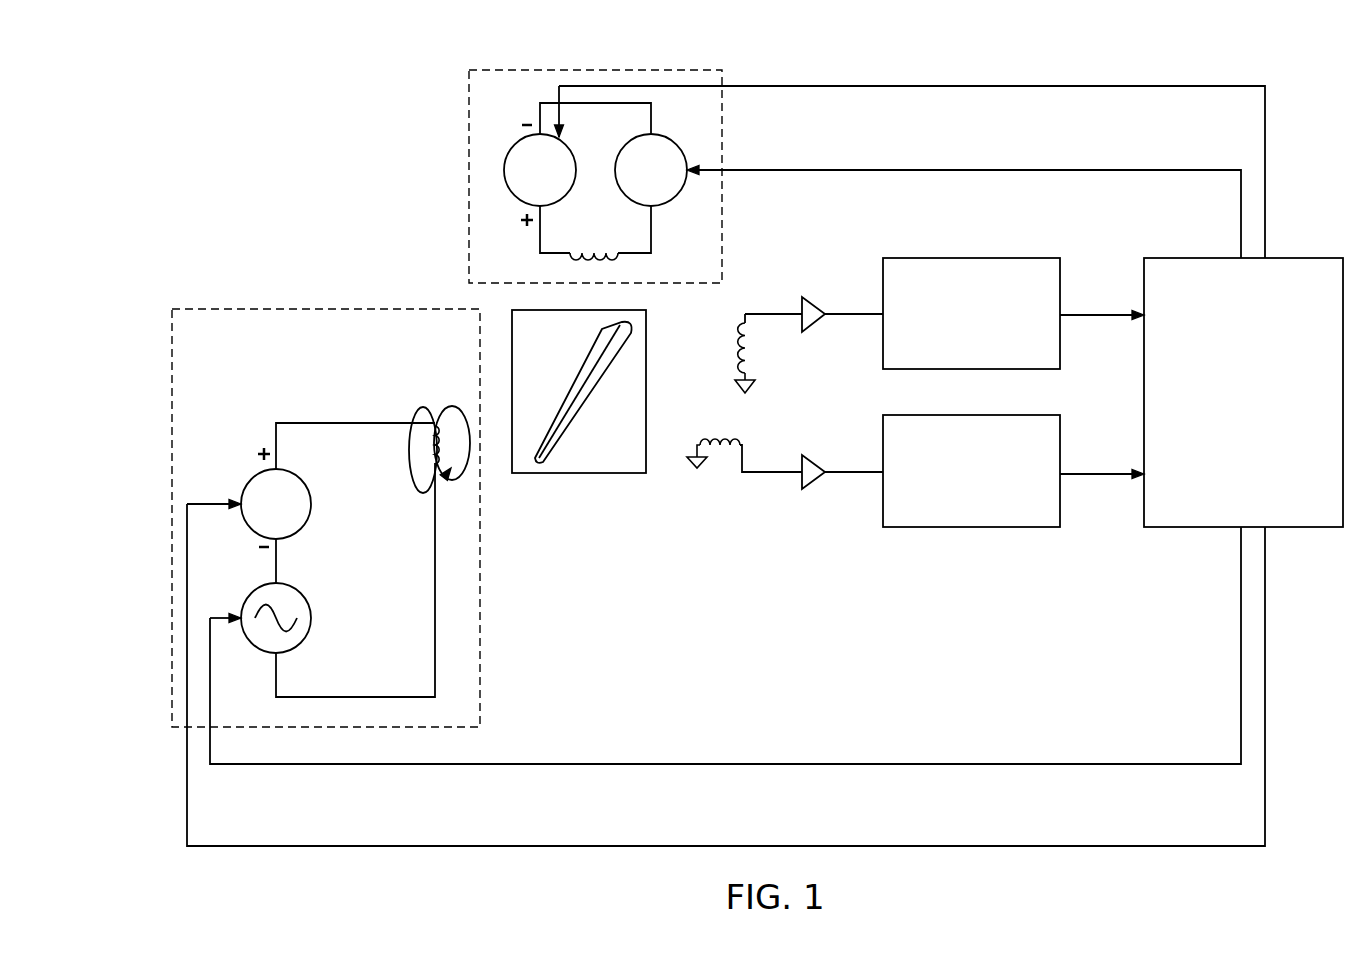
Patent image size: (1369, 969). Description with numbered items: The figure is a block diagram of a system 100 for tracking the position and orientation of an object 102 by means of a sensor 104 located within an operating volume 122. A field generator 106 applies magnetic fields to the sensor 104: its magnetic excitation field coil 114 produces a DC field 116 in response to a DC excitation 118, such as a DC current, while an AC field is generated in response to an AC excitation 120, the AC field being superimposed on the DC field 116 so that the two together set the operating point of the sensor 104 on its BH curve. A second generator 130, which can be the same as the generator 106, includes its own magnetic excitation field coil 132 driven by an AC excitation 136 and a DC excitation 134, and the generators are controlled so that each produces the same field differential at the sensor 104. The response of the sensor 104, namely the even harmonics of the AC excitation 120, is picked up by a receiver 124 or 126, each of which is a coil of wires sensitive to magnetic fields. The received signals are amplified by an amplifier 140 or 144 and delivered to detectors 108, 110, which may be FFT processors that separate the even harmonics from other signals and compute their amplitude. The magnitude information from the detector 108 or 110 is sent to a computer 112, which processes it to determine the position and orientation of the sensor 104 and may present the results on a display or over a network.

The system 100 is at (983, 52).
The object 102 is at (600, 372).
The sensor 104 is at (560, 425).
The field generator 106 is at (228, 308).
The detector 108 is at (932, 257).
The detector 110 is at (932, 414).
The computer 112 is at (1195, 257).
The magnetic excitation field coil 114 is at (435, 441).
The DC field 116 is at (417, 482).
The DC excitation 118 is at (253, 463).
The AC excitation 120 is at (256, 582).
The operating volume 122 is at (578, 473).
The receiver 124 is at (730, 353).
The receiver 126 is at (730, 433).
The generator 130 is at (525, 67).
The magnetic excitation field coil 132 is at (600, 250).
The DC excitation 134 is at (523, 135).
The AC excitation 136 is at (677, 137).
The amplifier 140 is at (812, 325).
The amplifier 144 is at (812, 478).